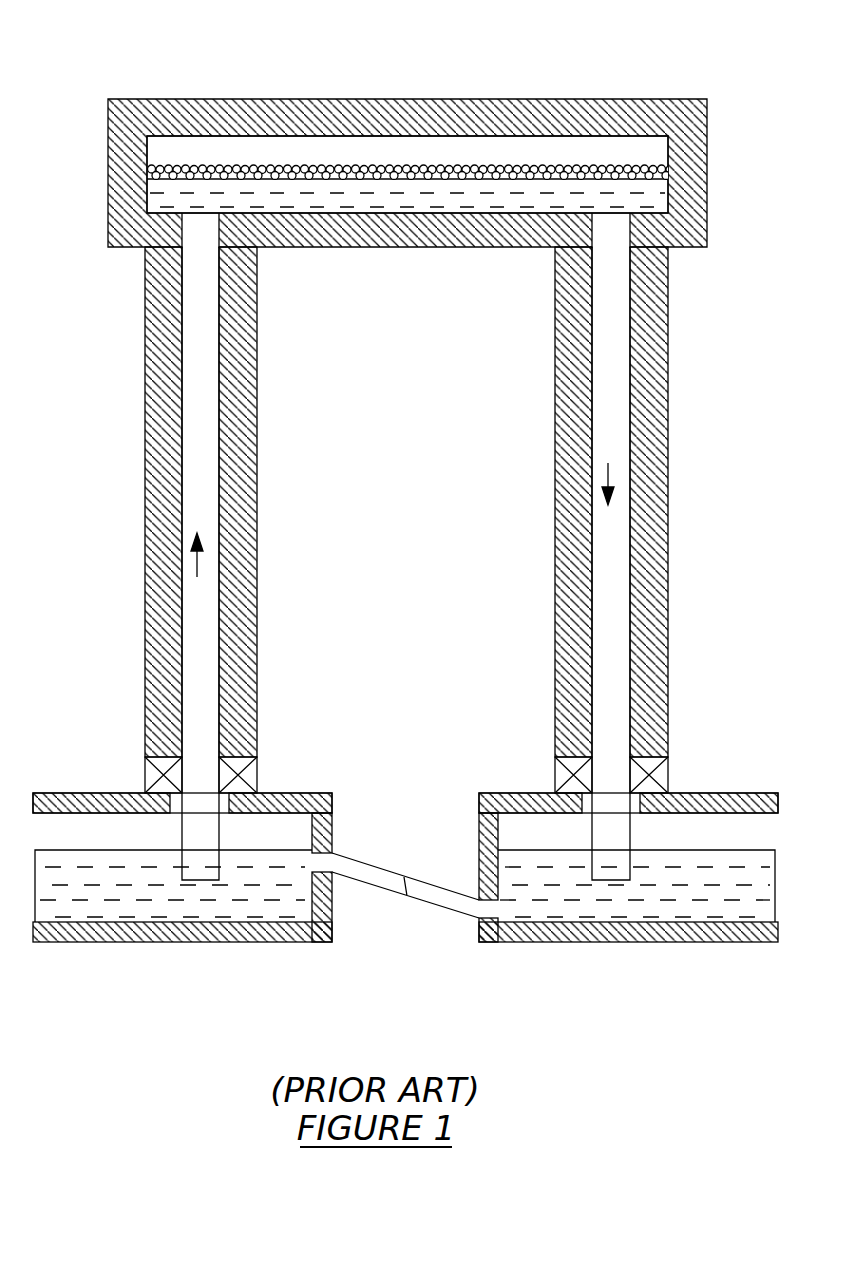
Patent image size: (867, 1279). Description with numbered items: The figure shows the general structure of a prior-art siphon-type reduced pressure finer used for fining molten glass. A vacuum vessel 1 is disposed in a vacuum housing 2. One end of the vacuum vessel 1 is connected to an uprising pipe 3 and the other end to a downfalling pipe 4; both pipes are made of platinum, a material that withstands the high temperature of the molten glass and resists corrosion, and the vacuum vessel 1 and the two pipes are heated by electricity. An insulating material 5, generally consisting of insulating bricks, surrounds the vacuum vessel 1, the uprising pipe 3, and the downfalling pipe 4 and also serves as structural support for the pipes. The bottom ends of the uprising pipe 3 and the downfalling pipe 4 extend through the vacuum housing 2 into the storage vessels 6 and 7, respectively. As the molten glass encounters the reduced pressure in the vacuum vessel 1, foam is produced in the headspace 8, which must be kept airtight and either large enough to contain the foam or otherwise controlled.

The vacuum vessel 1 is at (555, 145).
The vacuum housing 2 is at (120, 100).
The uprising pipe 3 is at (190, 345).
The downfalling pipe 4 is at (620, 325).
The insulating material 5 is at (423, 108).
The storage vessel 6 is at (150, 932).
The storage vessel 7 is at (657, 932).
The headspace 8 is at (287, 148).